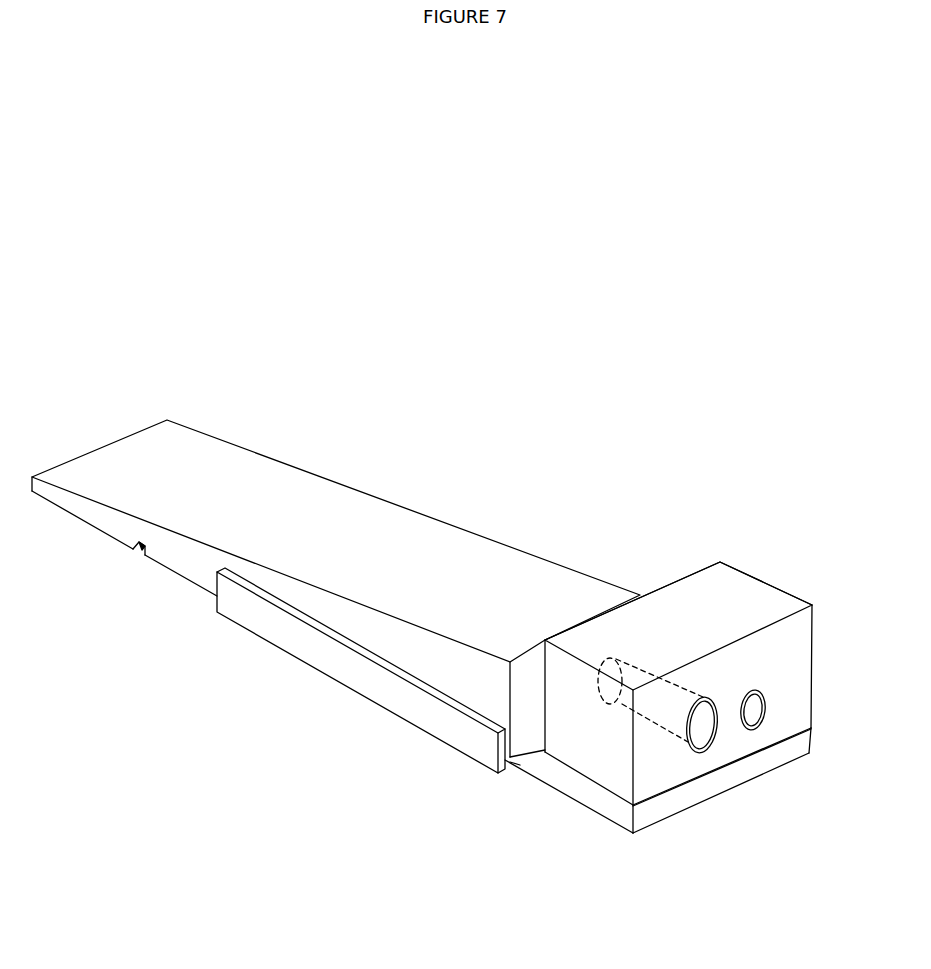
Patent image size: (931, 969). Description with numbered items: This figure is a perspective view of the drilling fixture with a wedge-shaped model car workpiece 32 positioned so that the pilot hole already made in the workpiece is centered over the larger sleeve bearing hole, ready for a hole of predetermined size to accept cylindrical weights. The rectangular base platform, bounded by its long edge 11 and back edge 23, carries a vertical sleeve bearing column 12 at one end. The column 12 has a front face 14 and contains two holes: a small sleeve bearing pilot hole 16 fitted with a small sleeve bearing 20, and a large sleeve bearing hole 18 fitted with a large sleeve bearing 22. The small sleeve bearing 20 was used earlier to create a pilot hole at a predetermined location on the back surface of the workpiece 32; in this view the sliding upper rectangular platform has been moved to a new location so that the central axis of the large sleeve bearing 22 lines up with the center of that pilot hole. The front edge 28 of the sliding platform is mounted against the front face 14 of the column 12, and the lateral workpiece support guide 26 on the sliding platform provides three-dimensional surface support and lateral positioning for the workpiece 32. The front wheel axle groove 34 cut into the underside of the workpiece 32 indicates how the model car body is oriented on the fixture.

The long edge 11 is at (590, 800).
The vertical sleeve bearing column 12 is at (675, 610).
The front face 14 is at (612, 608).
The small sleeve bearing pilot hole 16 is at (753, 690).
The large sleeve bearing hole 18 is at (707, 697).
The small sleeve bearing 20 is at (752, 712).
The large sleeve bearing 22 is at (702, 728).
The back edge 23 is at (672, 802).
The lateral workpiece support guide 26 is at (350, 675).
The front edge 28 is at (515, 763).
The wedge-shaped model car workpiece 32 is at (390, 522).
The front wheel axle groove 34 is at (137, 548).